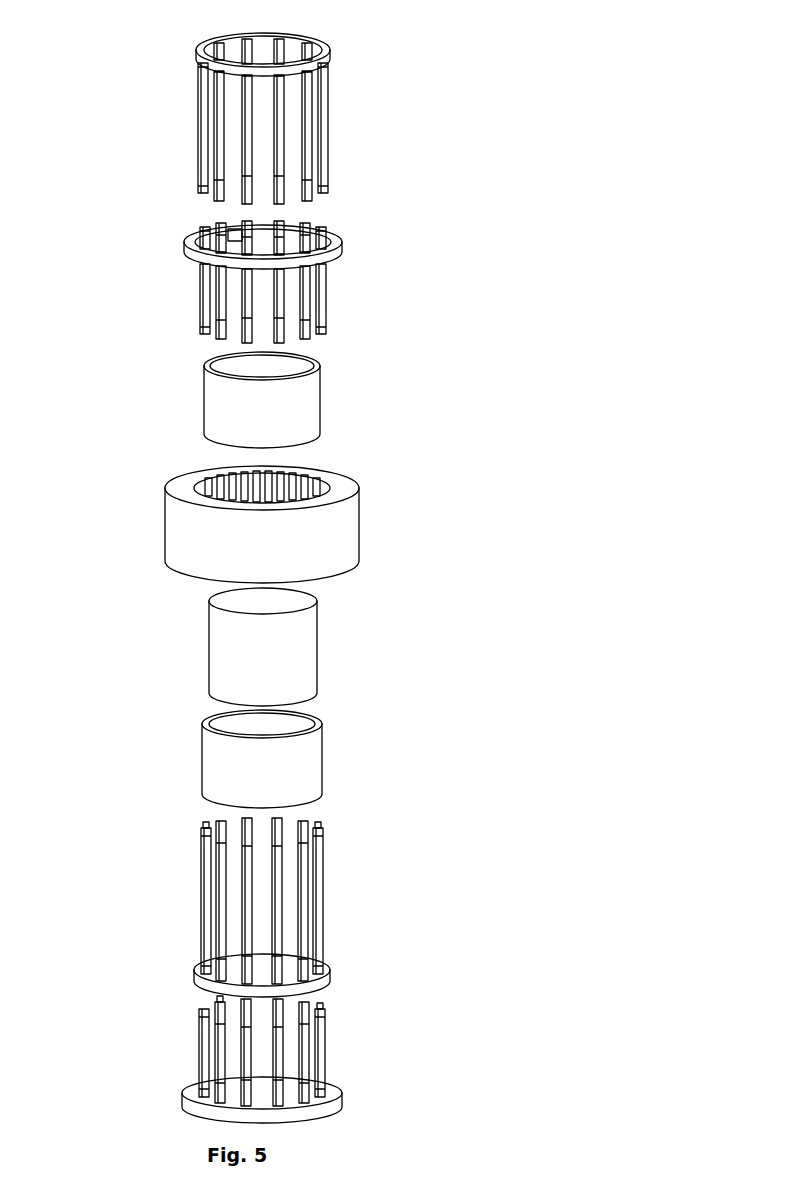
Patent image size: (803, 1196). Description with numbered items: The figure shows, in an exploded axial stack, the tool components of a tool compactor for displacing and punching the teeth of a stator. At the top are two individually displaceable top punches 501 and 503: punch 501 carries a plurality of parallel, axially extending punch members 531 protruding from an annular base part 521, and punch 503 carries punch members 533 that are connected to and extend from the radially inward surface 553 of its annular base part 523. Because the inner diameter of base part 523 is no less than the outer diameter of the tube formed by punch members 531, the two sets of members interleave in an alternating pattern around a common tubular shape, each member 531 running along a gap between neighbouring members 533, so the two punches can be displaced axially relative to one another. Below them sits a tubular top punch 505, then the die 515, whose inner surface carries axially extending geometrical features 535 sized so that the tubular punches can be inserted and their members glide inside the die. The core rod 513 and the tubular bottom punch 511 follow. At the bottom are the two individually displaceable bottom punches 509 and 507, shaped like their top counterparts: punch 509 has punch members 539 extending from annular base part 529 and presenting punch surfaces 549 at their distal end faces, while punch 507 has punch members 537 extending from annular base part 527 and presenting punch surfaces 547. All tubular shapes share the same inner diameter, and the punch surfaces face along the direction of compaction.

The top punch 501 is at (254, 118).
The annular base part 521 is at (326, 62).
The punch members 531 is at (197, 131).
The top punch 503 is at (256, 269).
The annular base part 523 is at (335, 239).
The punch members 533 is at (207, 303).
The radially inward surface 553 is at (255, 226).
The top punch 505 is at (314, 381).
The die 515 is at (273, 502).
The geometrical features 535 is at (228, 485).
The core rod 513 is at (296, 618).
The bottom punch 511 is at (312, 740).
The bottom punch 509 is at (251, 889).
The punch surfaces 549 is at (200, 824).
The punch members 539 is at (238, 868).
The annular base part 529 is at (320, 973).
The bottom punch 507 is at (256, 1046).
The punch surfaces 547 is at (212, 1000).
The punch members 537 is at (195, 1032).
The annular base part 527 is at (322, 1110).